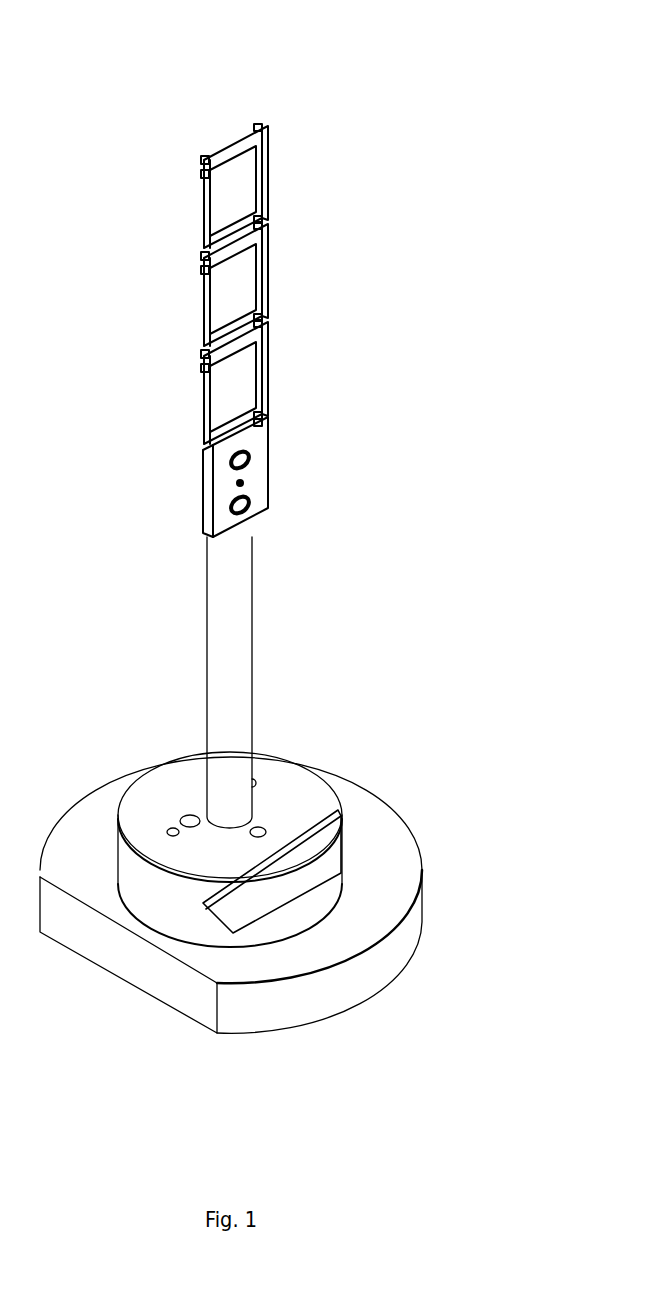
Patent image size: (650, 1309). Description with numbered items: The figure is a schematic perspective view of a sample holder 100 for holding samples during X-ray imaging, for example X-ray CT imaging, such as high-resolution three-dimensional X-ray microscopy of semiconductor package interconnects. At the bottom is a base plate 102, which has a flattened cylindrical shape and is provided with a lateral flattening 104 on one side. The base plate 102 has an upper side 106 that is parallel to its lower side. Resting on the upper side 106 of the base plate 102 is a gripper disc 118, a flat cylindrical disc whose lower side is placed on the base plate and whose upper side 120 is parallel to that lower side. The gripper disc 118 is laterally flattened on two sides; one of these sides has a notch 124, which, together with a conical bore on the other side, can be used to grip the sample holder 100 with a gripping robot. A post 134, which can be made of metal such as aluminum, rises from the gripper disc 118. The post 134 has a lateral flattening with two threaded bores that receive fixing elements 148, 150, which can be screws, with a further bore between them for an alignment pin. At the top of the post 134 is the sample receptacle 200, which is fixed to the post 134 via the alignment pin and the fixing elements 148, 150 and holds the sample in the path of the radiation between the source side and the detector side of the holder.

The sample holder 100 is at (178, 83).
The base plate 102 is at (385, 808).
The lateral flattening 104 is at (138, 970).
The upper side 106 is at (382, 862).
The gripper disc 118 is at (282, 756).
The upper side 120 is at (157, 805).
The notch 124 is at (255, 902).
The post 134 is at (254, 550).
The fixing element 148 is at (250, 456).
The fixing element 150 is at (250, 502).
The sample receptacle 200 is at (270, 165).